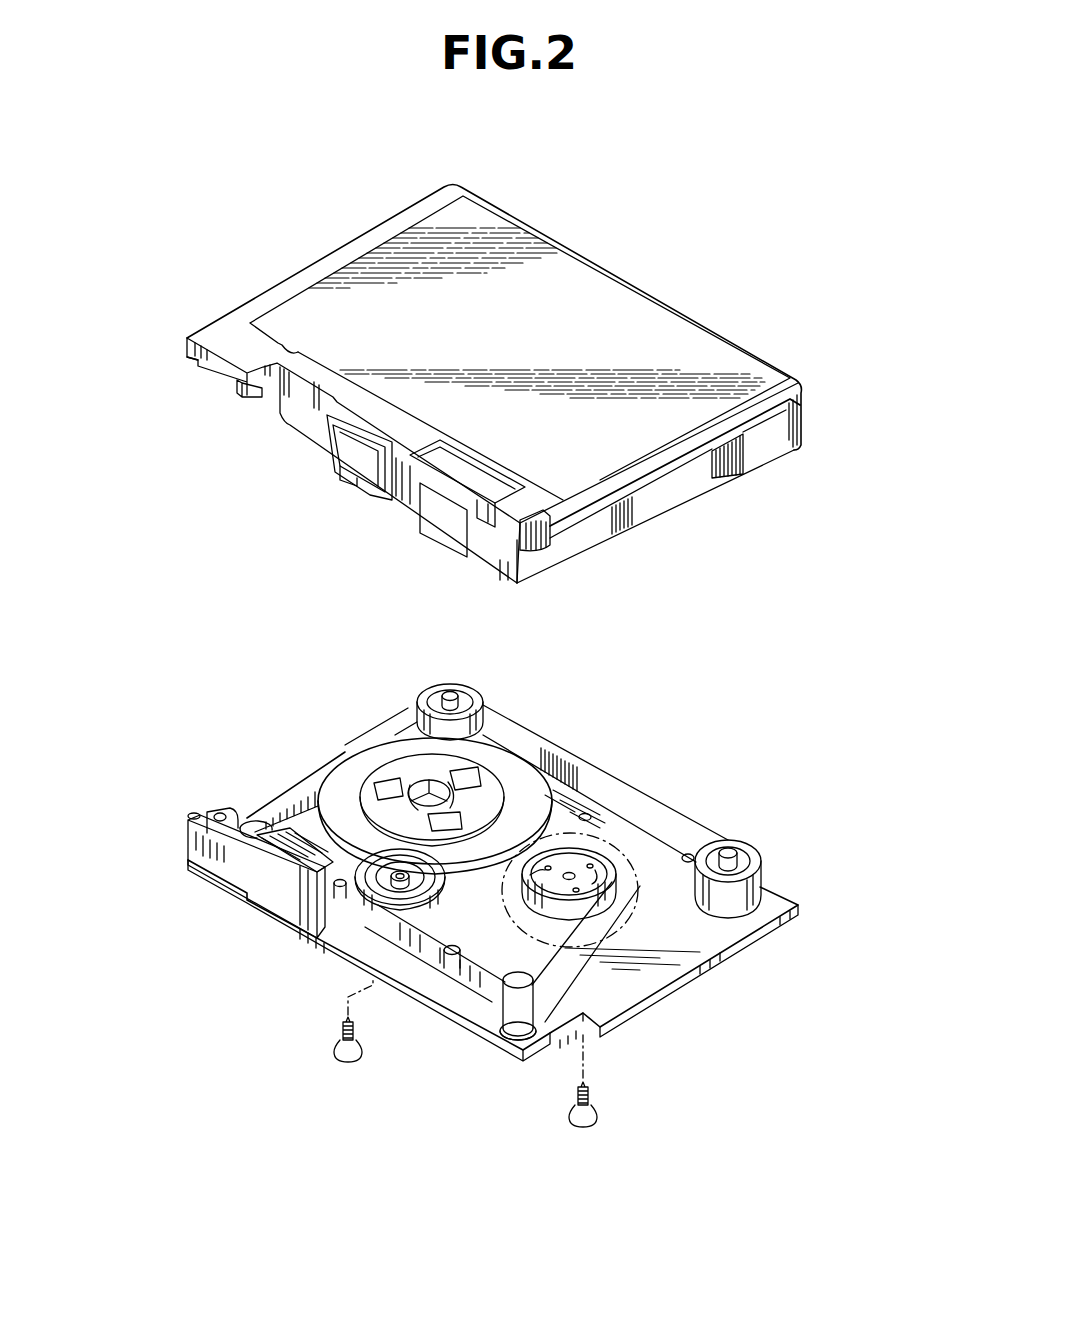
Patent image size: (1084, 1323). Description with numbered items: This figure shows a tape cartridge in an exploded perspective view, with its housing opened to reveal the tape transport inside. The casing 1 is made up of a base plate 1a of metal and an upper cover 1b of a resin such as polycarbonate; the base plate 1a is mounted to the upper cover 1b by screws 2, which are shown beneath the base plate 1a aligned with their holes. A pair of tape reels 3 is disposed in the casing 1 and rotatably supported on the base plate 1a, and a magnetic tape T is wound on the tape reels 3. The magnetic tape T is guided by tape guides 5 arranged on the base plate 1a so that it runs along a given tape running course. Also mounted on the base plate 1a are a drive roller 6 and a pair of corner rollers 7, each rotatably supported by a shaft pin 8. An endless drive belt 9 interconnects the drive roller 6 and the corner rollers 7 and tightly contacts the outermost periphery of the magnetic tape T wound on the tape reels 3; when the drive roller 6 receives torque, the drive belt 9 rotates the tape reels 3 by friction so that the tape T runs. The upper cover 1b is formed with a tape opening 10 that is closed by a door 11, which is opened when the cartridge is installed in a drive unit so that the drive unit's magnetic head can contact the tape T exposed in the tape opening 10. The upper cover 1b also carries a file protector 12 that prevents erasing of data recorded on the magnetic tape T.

The casing 1 is at (820, 657).
The base plate 1a is at (762, 945).
The upper cover 1b is at (677, 487).
The screws 2 is at (335, 1040).
The tape reels 3 is at (398, 770).
The tape guides 5 is at (256, 823).
The drive roller 6 is at (367, 885).
The corner rollers 7 is at (423, 702).
The shaft pin 8 is at (450, 693).
The drive belt 9 is at (653, 880).
The tape opening 10 is at (298, 413).
The door 11 is at (272, 892).
The file protector 12 is at (545, 540).
The magnetic tape T is at (463, 982).